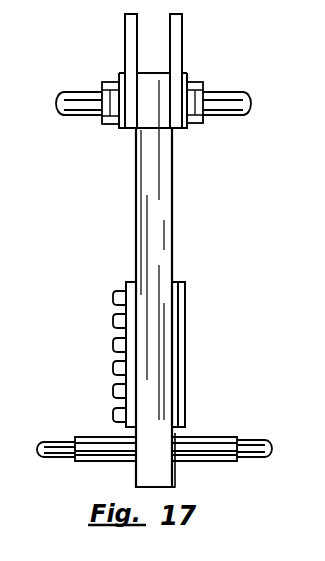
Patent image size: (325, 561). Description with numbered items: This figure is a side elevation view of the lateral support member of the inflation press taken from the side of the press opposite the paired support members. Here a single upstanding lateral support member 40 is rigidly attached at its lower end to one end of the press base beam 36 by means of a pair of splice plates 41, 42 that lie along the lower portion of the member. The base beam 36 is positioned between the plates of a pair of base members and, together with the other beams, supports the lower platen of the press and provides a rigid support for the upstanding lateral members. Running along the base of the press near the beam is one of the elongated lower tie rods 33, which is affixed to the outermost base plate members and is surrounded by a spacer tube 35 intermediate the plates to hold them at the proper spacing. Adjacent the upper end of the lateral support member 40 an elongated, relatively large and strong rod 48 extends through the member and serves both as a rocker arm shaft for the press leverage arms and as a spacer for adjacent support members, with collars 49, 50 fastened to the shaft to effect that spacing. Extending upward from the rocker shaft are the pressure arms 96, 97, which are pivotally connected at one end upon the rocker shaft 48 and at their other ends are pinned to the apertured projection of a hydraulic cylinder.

The lower tie rod 33 is at (250, 442).
The spacer tube 35 is at (204, 445).
The press base beam 36 is at (142, 471).
The lateral support member 40 is at (168, 220).
The splice plate 41 is at (170, 356).
The splice plate 42 is at (178, 333).
The rod 48 is at (75, 100).
The collar 49 is at (110, 126).
The collar 50 is at (197, 124).
The pressure arm 96 is at (127, 33).
The pressure arm 97 is at (178, 29).